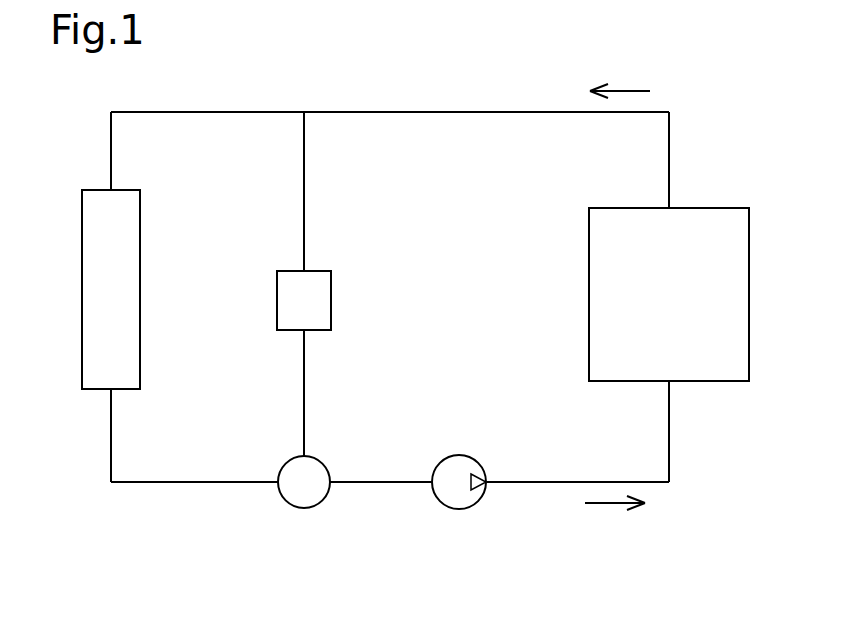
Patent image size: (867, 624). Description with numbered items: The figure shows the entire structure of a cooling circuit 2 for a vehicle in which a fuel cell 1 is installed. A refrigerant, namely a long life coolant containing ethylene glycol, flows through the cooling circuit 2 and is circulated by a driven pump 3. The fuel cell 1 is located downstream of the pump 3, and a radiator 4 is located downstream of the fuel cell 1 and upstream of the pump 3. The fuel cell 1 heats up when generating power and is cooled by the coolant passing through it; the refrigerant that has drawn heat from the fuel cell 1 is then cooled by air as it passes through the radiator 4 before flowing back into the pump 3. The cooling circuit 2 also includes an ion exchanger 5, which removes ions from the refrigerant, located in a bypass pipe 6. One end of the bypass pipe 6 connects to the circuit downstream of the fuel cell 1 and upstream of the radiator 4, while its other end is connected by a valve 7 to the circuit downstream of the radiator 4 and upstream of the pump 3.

The fuel cell 1 is at (733, 208).
The cooling circuit 2 is at (670, 112).
The pump 3 is at (461, 456).
The radiator 4 is at (126, 189).
The ion exchanger 5 is at (318, 271).
The bypass pipe 6 is at (305, 180).
The valve 7 is at (324, 458).